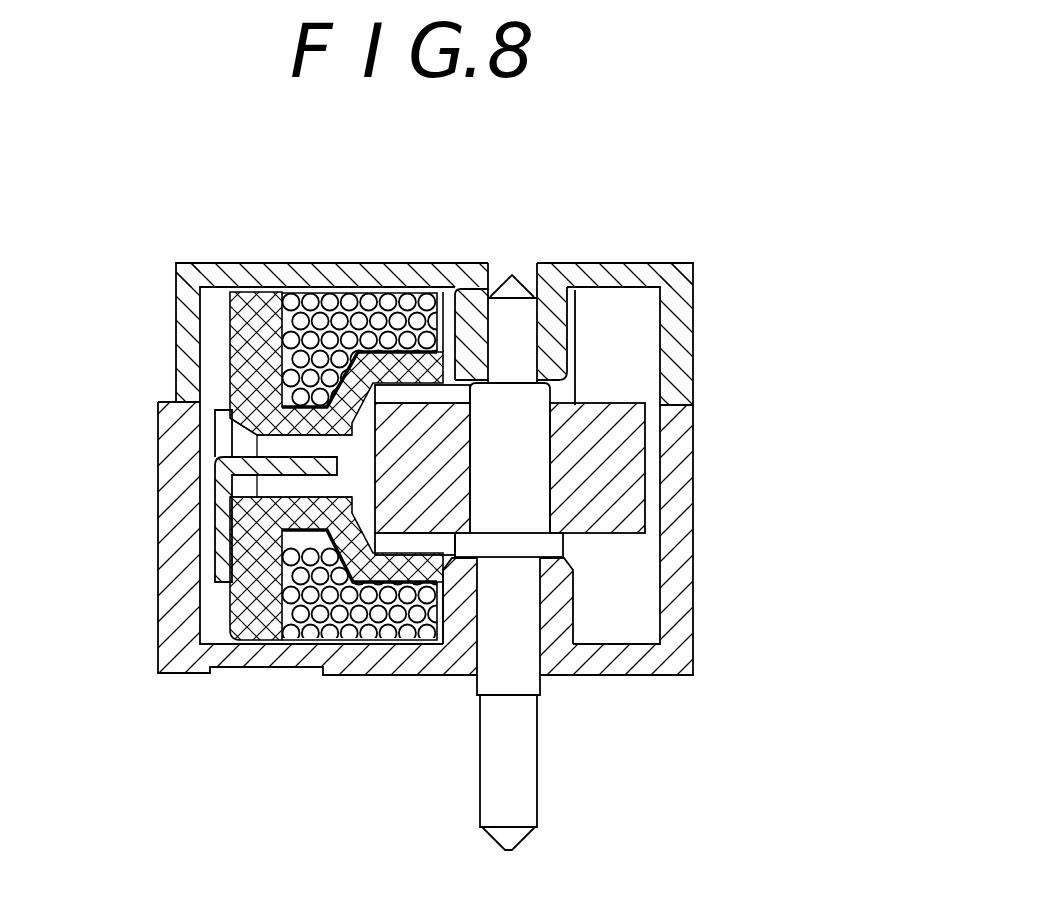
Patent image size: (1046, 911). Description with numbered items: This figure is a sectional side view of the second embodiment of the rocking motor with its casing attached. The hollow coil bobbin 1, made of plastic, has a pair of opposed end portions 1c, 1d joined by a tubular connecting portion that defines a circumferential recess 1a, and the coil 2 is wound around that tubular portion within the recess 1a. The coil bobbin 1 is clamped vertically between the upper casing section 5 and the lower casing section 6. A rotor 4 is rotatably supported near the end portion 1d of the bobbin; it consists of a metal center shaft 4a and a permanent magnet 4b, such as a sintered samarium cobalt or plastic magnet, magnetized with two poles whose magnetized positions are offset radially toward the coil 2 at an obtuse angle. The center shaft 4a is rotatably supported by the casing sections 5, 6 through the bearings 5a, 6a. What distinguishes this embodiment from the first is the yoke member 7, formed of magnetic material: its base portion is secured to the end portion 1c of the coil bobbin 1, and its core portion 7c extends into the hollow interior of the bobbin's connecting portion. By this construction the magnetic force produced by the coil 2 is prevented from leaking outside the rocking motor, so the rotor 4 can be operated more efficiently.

The coil bobbin 1 is at (352, 618).
The circumferential recess 1a is at (315, 303).
The end portion 1c is at (253, 312).
The end portion 1d is at (272, 447).
The coil 2 is at (367, 317).
The rotor 4 is at (800, 378).
The center shaft 4a is at (510, 343).
The permanent magnet 4b is at (610, 470).
The upper casing section 5 is at (677, 323).
The bearing 5a is at (470, 290).
The lower casing section 6 is at (677, 645).
The bearing 6a is at (553, 610).
The yoke member 7 is at (187, 598).
The core portion 7c is at (275, 468).